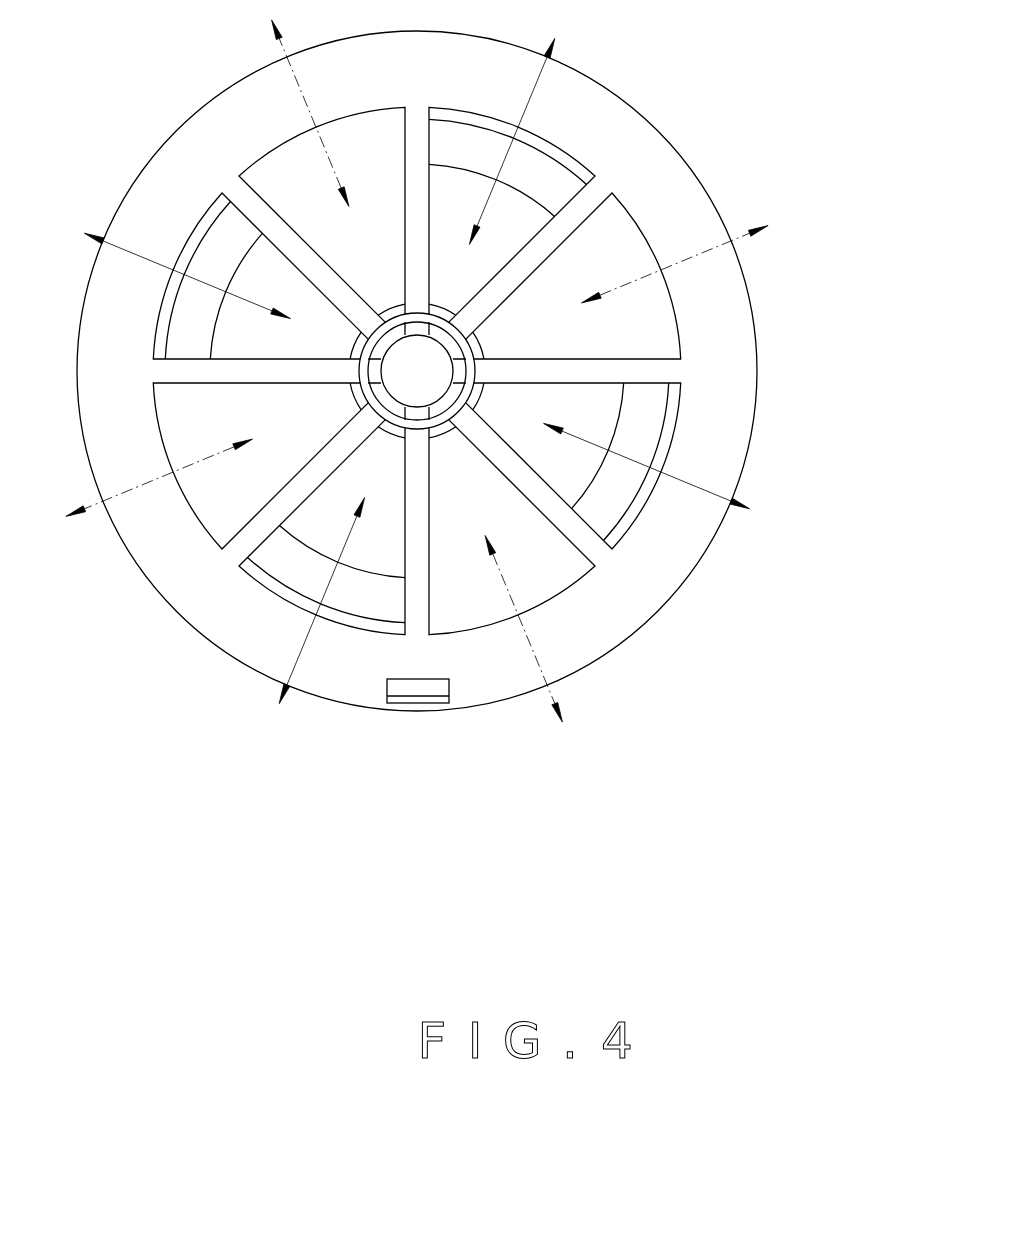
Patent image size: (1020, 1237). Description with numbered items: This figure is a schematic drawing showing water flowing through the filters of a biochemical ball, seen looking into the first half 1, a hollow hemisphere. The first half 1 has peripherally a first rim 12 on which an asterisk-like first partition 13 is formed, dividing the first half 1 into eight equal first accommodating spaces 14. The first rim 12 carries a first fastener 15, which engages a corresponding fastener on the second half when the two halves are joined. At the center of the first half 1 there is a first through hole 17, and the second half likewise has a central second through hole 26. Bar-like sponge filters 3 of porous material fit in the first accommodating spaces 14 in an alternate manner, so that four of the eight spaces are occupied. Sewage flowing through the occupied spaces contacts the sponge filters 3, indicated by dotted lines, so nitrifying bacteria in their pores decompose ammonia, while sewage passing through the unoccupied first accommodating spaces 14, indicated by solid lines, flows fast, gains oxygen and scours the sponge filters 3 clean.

The first half 1 is at (845, 542).
The sponge filter 3 is at (618, 243).
The first rim 12 is at (702, 455).
The first partition 13 is at (585, 537).
The first accommodating space 14 is at (567, 483).
The first fastener 15 is at (430, 690).
The first through hole 17 is at (415, 370).
The second through hole 26 is at (433, 435).